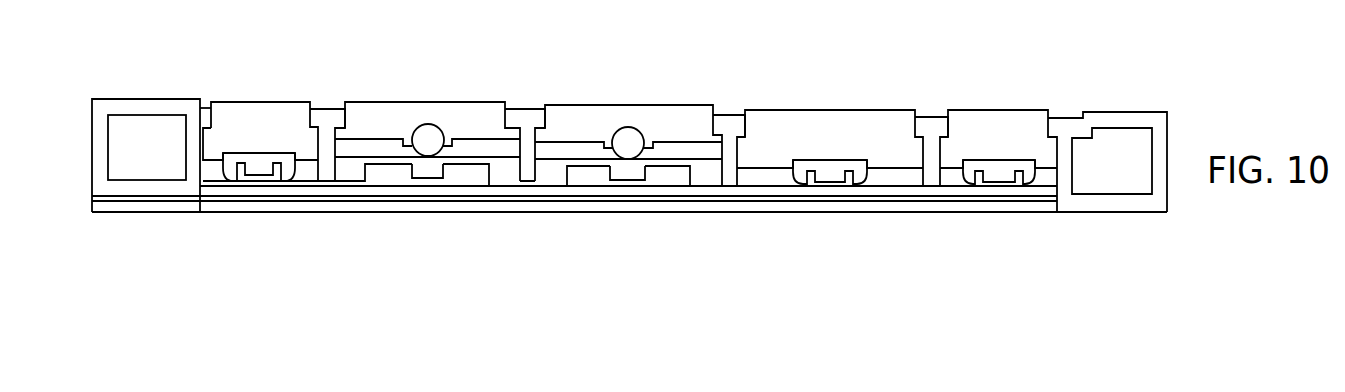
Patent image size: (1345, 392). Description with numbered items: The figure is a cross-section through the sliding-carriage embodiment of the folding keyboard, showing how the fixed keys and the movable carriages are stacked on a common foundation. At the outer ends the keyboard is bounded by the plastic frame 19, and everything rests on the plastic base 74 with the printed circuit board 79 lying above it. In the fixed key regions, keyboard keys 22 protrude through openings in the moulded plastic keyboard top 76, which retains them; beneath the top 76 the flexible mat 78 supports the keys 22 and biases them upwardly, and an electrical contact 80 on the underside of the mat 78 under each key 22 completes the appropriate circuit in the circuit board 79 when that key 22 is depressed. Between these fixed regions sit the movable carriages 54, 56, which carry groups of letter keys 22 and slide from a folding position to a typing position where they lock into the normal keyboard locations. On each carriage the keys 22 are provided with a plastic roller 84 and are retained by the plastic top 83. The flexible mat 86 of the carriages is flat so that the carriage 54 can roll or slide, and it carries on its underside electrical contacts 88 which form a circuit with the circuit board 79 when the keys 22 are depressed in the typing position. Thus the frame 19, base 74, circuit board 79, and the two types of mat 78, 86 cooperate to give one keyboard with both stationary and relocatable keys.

The plastic frame 19 is at (145, 105).
The keyboard keys 22 is at (247, 107).
The carriage 54 is at (377, 80).
The carriage 56 is at (660, 90).
The plastic base 74 is at (1017, 218).
The moulded plastic keyboard top 76 is at (323, 107).
The flexible mat 78 is at (215, 188).
The printed circuit board 79 is at (900, 200).
The electrical contact 80 is at (263, 172).
The plastic top 83 is at (527, 108).
The plastic roller 84 is at (430, 138).
The flexible mat 86 is at (387, 160).
The electrical contacts 88 is at (425, 172).